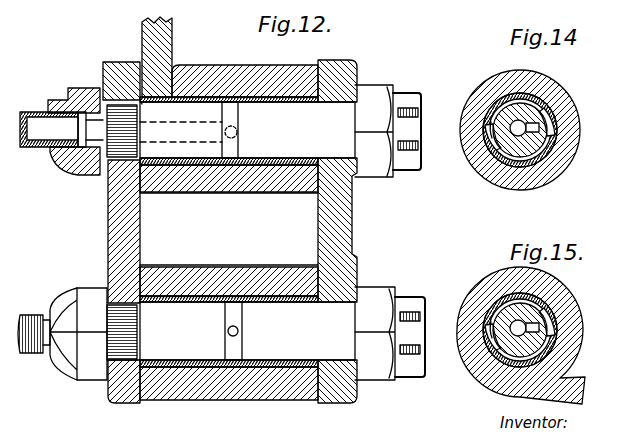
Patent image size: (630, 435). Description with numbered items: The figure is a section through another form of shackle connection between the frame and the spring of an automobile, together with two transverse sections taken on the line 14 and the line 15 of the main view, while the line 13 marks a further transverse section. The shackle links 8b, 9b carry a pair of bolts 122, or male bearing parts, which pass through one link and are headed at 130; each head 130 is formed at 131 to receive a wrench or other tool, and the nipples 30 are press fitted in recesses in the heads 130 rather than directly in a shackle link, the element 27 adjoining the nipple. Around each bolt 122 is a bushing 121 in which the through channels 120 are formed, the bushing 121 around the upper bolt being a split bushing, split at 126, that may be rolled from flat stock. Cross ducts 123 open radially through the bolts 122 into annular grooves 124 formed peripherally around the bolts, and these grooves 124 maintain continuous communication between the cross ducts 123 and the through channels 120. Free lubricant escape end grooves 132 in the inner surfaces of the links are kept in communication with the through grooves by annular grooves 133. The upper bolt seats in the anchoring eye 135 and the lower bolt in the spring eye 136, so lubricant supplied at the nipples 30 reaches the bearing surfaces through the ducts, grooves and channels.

In FIG. 12, the shackle link 8b is at (115, 232).
In FIG. 12, the shackle link 9b is at (355, 214).
In FIG. 12, the section line 13 is at (128, 20).
In FIG. 12, the section line 14 is at (218, 48).
In FIG. 12, the section line 15 is at (225, 258).
In FIG. 12, the collar washer 27' 27 is at (62, 108).
In FIG. 12, the nipple 30 is at (30, 140).
In FIG. 12, the through channel 120 is at (275, 158).
In FIG. 14, the through channel 120 is at (544, 98).
In FIG. 15, the through channel 120 is at (545, 298).
In FIG. 12, the bushing 121 is at (280, 100).
In FIG. 14, the bushing 121 is at (550, 118).
In FIG. 15, the bushing 121 is at (550, 318).
In FIG. 12, the bolt 122 is at (282, 165).
In FIG. 14, the bolt 122 is at (484, 160).
In FIG. 15, the bolt 122 is at (488, 318).
In FIG. 12, the cross duct 123 is at (225, 133).
In FIG. 14, the cross duct 123 is at (552, 143).
In FIG. 15, the cross duct 123 is at (552, 333).
In FIG. 12, the annular groove 124 is at (226, 146).
In FIG. 14, the annular groove 124 is at (489, 131).
In FIG. 15, the annular groove 124 is at (490, 340).
In FIG. 14, the split 126 is at (554, 125).
In FIG. 12, the head 130 is at (70, 97).
In FIG. 12, the wrench-receiving formation 131 is at (88, 180).
In FIG. 12, the free lubricant escape end groove 132 is at (120, 188).
In FIG. 12, the annular groove 133 is at (143, 102).
In FIG. 12, the anchoring eye 135 is at (205, 188).
In FIG. 14, the anchoring eye 135 is at (495, 82).
In FIG. 12, the spring eye 136 is at (210, 395).
In FIG. 15, the spring eye 136 is at (492, 290).